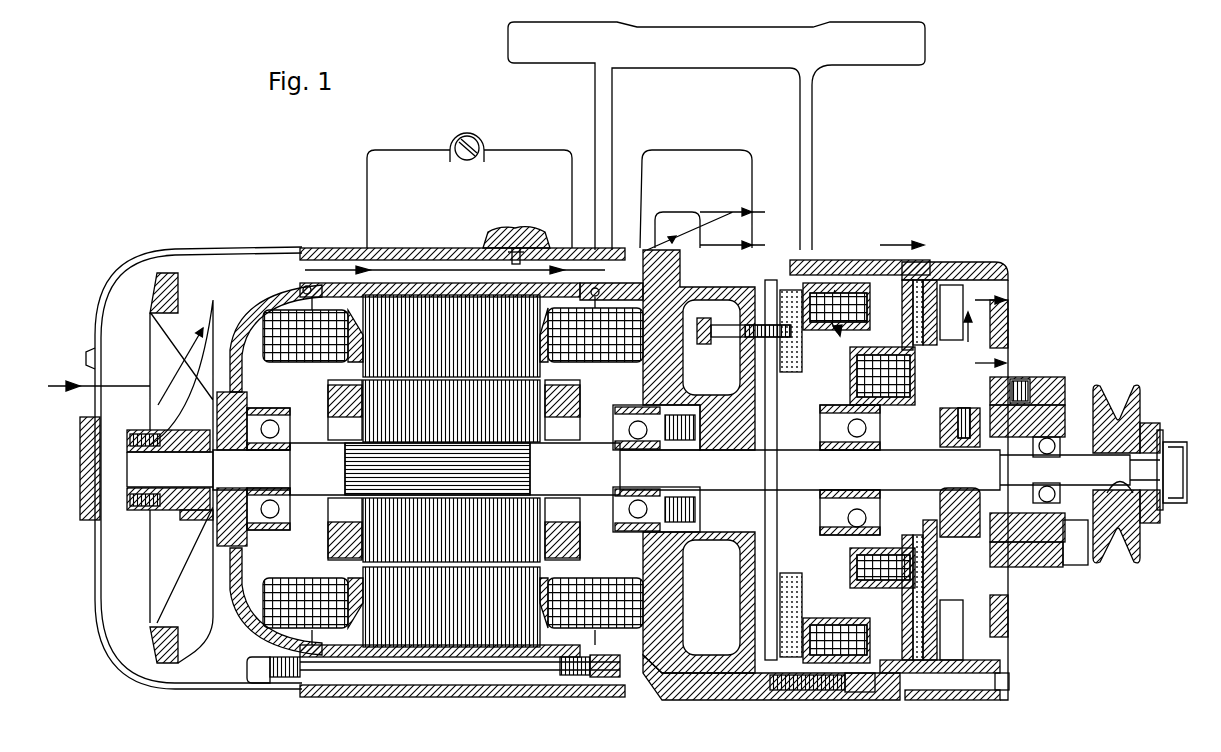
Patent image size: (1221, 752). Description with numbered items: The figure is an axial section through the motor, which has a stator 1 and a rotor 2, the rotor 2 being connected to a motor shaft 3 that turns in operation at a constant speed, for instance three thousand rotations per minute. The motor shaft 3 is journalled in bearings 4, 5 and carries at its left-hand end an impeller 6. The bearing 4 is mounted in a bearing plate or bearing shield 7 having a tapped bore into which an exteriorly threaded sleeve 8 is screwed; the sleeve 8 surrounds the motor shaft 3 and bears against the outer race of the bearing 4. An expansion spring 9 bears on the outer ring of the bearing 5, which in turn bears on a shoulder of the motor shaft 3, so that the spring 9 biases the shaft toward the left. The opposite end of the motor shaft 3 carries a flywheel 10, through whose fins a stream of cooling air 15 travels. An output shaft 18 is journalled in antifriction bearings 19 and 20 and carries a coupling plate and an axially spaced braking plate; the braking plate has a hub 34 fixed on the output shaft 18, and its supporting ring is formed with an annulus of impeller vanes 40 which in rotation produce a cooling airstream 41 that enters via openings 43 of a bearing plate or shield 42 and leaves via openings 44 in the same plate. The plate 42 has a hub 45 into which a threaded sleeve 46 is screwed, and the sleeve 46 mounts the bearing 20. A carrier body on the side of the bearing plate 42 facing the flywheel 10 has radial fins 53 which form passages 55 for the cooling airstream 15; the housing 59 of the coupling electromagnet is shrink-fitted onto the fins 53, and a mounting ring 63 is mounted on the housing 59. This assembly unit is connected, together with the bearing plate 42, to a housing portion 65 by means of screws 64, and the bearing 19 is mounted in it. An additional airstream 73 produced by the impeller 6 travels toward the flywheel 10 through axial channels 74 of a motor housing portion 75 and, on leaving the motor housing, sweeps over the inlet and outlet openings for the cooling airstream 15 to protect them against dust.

The stator 1 is at (363, 372).
The rotor 2 is at (372, 540).
The motor shaft 3 is at (303, 450).
The bearing 4 is at (290, 520).
The bearing 5 is at (617, 414).
The impeller 6 is at (158, 302).
The bearing plate 7 is at (243, 627).
The threaded sleeve 8 is at (222, 520).
The expansion spring 9 is at (692, 553).
The flywheel 10 is at (690, 665).
The cooling air stream 15 is at (920, 246).
The output shaft 18 is at (1128, 450).
The antifriction bearing 19 is at (862, 442).
The antifriction bearing 20 is at (1038, 490).
The hub 34 is at (948, 540).
The impeller vanes 40 is at (952, 287).
The cooling airstream 41 is at (1008, 297).
The bearing plate 42 is at (1010, 617).
The openings 43 is at (1012, 360).
The openings 44 is at (1010, 306).
The hub 45 is at (1045, 565).
The threaded sleeve 46 is at (1075, 550).
The radial fins 53 is at (890, 668).
The passages 55 is at (882, 262).
The housing 59 is at (842, 690).
The mounting ring 63 is at (832, 262).
The screws 64 is at (1010, 681).
The housing portion 65 is at (735, 686).
The airstream 73 is at (228, 296).
The axial channels 74 is at (414, 228).
The motor housing portion 75 is at (400, 690).